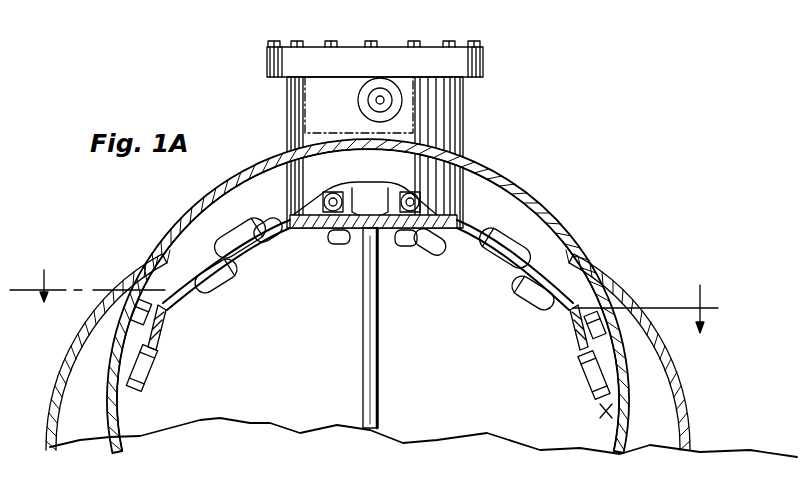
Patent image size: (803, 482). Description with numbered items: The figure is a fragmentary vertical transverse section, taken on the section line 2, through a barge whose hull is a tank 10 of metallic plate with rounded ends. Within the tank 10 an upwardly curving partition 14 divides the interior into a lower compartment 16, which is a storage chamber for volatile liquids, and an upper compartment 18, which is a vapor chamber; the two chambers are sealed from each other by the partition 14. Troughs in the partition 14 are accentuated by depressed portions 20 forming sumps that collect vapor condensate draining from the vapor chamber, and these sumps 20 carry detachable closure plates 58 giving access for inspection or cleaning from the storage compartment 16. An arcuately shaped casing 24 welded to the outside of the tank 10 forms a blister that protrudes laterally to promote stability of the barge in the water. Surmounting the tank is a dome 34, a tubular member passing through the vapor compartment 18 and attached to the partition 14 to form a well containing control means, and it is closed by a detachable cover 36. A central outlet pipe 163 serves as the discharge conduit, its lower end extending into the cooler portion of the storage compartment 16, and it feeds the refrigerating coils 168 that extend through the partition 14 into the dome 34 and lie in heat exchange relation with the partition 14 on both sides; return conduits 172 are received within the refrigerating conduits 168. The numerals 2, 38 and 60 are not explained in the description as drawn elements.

The section line 2- 2 is at (364, 313).
The cylindrical elongated casing or container 10 is at (371, 307).
The partition 14 is at (240, 250).
The lower compartment 16 is at (135, 425).
The upper compartment 18 is at (514, 203).
The depressed portion 20 is at (608, 422).
The arcuately shaped casing 24 is at (52, 380).
The dome 34 is at (455, 114).
The detachable closure or cover 36 is at (385, 58).
The clamp 38 is at (149, 374).
The detachable cover or closure plate 58 is at (583, 372).
The port fitting 60 is at (358, 103).
The outlet pipe 163 is at (379, 352).
The refrigerating coil 168 is at (228, 274).
The return conduit 172 is at (355, 243).